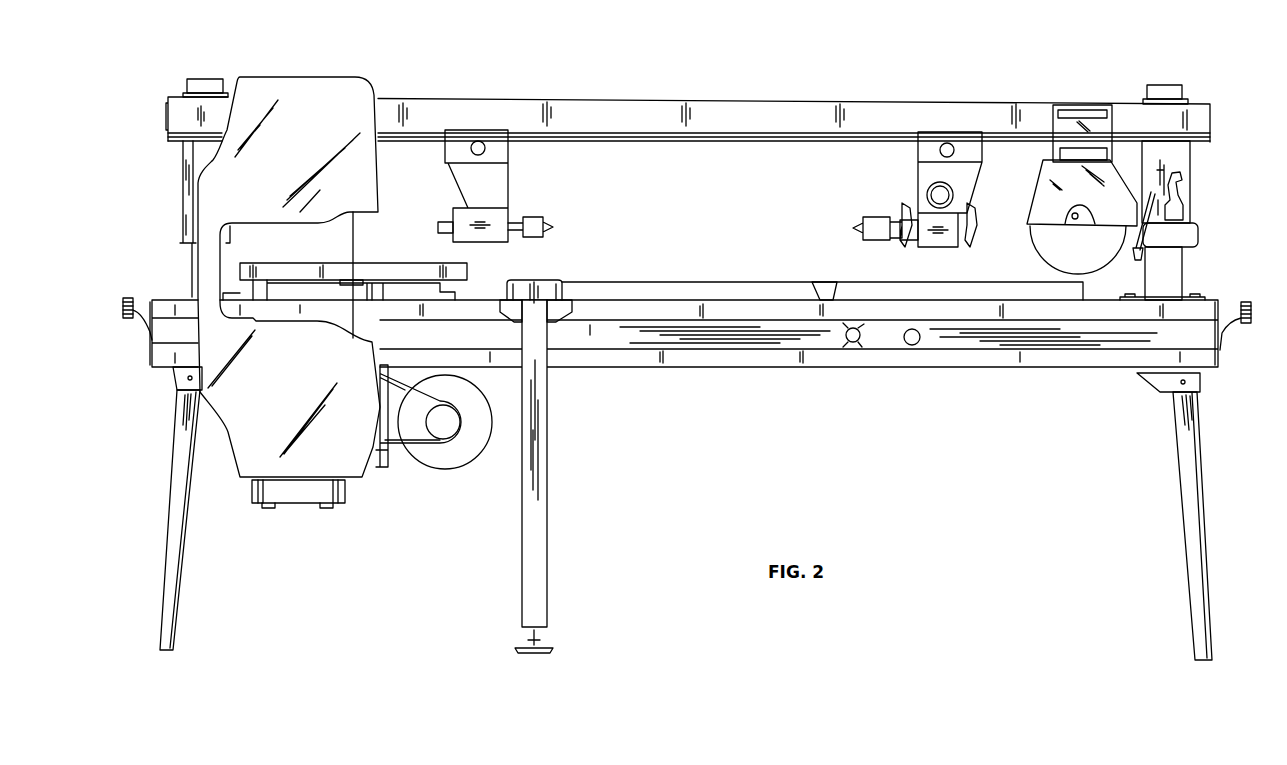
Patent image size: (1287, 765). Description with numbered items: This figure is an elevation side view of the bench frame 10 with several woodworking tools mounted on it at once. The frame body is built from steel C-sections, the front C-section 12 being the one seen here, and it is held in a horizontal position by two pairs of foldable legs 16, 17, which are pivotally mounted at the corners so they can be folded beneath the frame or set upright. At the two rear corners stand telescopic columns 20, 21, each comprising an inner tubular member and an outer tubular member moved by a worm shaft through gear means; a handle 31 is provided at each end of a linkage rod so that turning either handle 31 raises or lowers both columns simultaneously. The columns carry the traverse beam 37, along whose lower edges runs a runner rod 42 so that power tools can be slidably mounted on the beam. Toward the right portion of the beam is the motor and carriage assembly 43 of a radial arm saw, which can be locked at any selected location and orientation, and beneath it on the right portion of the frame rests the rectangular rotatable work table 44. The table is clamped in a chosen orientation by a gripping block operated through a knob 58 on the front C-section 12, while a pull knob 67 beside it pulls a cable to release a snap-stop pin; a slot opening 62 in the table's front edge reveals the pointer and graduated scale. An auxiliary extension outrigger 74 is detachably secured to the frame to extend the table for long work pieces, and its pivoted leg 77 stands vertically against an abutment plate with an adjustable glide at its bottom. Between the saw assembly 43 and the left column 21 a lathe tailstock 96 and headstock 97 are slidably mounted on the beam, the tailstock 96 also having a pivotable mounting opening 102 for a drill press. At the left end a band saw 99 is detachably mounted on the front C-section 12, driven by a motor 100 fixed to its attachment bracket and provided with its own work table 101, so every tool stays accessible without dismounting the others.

The bench frame 10 is at (1210, 300).
The front C-section 12 is at (713, 367).
The foldable leg 16 is at (1203, 523).
The foldable leg 17 is at (180, 577).
The telescopic column 20 is at (1175, 84).
The telescopic column 21 is at (197, 79).
The handle 31 is at (124, 325).
The traverse beam 37 is at (760, 105).
The runner rod 42 is at (737, 141).
The motor and carriage assembly 43 is at (1043, 216).
The rotatable work table 44 is at (697, 283).
The knob 58 is at (862, 342).
The slot opening 62 is at (819, 291).
The pull knob 67 is at (919, 343).
The auxiliary extension outrigger 74 is at (540, 279).
The leg 77 is at (549, 476).
The tailstock 96 is at (918, 158).
The headstock 97 is at (508, 188).
The band saw 99 is at (362, 87).
The motor 100 is at (460, 460).
The work table 101 is at (385, 264).
The pivotable mounting opening 102 is at (953, 195).